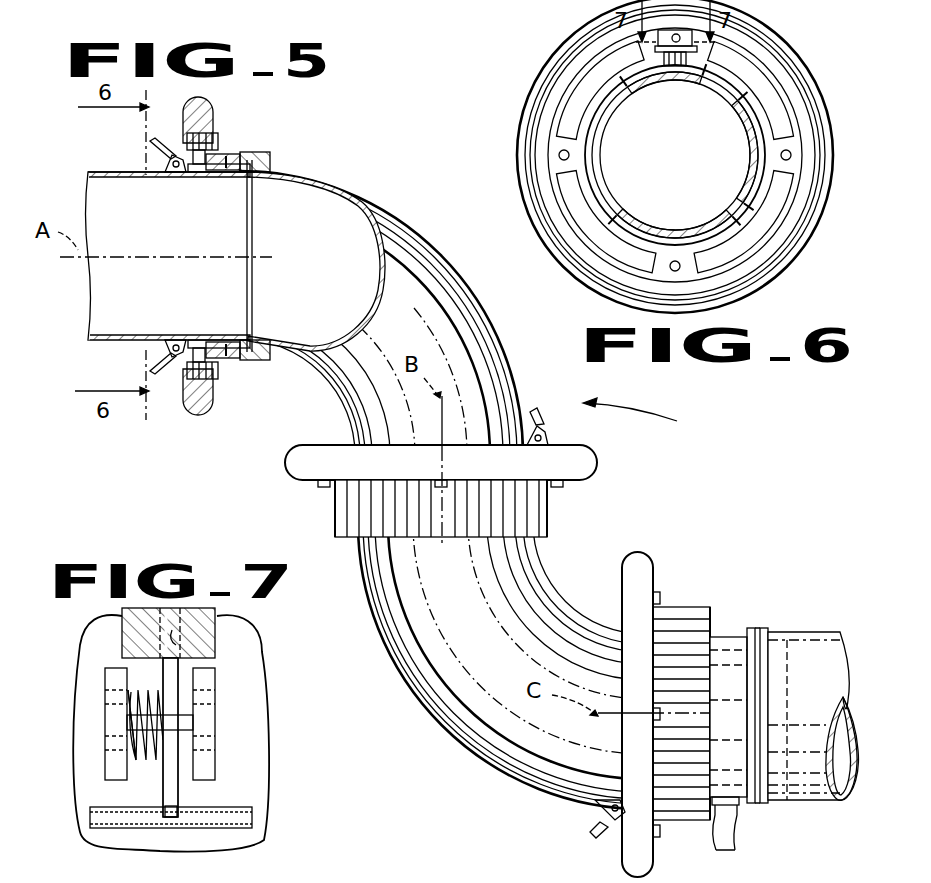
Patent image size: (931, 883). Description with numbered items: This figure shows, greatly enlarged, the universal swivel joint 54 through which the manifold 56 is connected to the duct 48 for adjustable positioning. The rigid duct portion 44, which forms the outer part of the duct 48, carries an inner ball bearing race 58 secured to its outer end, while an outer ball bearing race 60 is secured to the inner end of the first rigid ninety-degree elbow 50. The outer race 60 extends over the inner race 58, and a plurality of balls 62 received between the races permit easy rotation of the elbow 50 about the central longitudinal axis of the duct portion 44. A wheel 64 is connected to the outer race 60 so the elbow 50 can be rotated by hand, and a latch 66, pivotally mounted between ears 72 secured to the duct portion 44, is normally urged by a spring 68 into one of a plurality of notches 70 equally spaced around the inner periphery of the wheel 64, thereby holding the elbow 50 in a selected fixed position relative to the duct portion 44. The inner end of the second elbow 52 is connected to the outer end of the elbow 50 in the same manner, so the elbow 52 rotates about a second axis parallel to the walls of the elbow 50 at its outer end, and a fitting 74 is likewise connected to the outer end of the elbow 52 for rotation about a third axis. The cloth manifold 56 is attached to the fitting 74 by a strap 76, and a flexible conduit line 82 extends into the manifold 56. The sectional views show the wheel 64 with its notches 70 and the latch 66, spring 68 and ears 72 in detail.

In FIG. 5, the rigid duct portion 44 is at (96, 312).
In FIG. 6, the rigid duct portion 44 is at (586, 158).
In FIG. 7, the rigid duct portion 44 is at (270, 765).
In FIG. 5, the duct 48 is at (86, 170).
In FIG. 5, the rigid 90° elbow 50 is at (418, 232).
In FIG. 5, the rigid 90° elbow 52 is at (433, 714).
In FIG. 5, the universal swivel joint 54 is at (648, 415).
In FIG. 5, the manifold 56 is at (816, 634).
In FIG. 5, the inner ball bearing race 58 is at (252, 186).
In FIG. 5, the outer ball bearing race 60 is at (240, 154).
In FIG. 6, the outer ball bearing race 60 is at (768, 90).
In FIG. 5, the balls 62 is at (223, 156).
In FIG. 5, the wheel 64 is at (214, 408).
In FIG. 6, the wheel 64 is at (542, 77).
In FIG. 7, the wheel 64 is at (130, 633).
In FIG. 5, the latch 66 is at (158, 174).
In FIG. 6, the latch 66 is at (677, 70).
In FIG. 7, the latch 66 is at (172, 798).
In FIG. 7, the spring 68 is at (128, 758).
In FIG. 5, the notches 70 is at (204, 180).
In FIG. 6, the notches 70 is at (620, 80).
In FIG. 7, the notches 70 is at (196, 647).
In FIG. 5, the ears 72 is at (173, 172).
In FIG. 7, the ears 72 is at (108, 714).
In FIG. 5, the fitting 74 is at (728, 637).
In FIG. 5, the strap 76 is at (760, 806).
In FIG. 5, the line 82 is at (735, 847).